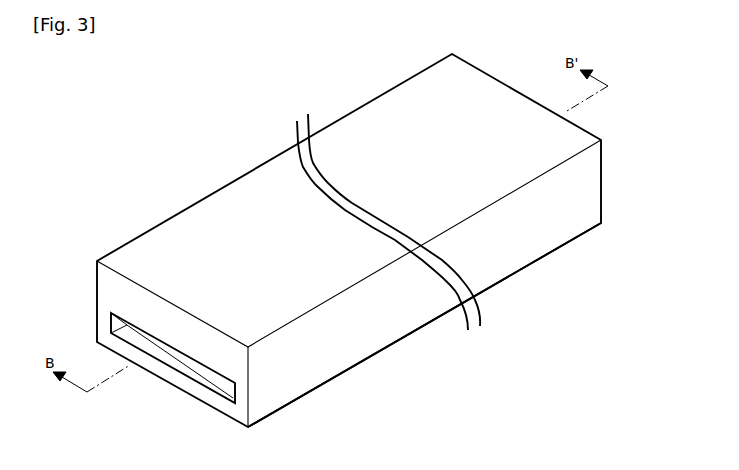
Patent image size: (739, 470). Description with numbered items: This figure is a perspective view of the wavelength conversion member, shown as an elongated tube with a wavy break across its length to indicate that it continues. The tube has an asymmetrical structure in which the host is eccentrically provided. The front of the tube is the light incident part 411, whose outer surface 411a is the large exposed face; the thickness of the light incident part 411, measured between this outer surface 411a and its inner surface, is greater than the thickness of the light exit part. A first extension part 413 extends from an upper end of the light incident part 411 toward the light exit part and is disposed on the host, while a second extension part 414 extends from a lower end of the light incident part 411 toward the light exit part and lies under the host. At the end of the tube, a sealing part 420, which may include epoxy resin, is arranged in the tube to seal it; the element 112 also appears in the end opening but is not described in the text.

The light incident part 411 is at (173, 340).
The outer surface of the light incident part 411a is at (343, 282).
The second extension part 414 is at (109, 321).
The sealing part 420 is at (220, 385).
The flexible display 112 is at (197, 392).
The first extension part 413 is at (242, 395).